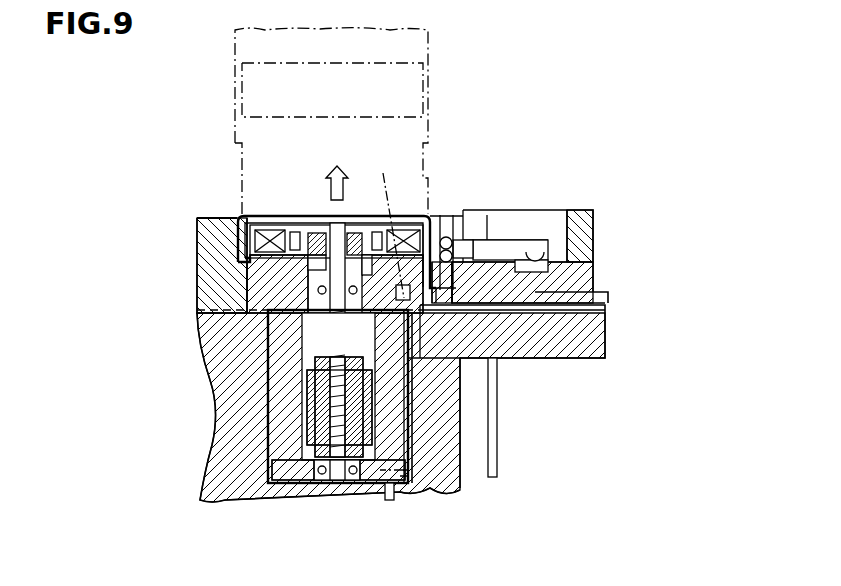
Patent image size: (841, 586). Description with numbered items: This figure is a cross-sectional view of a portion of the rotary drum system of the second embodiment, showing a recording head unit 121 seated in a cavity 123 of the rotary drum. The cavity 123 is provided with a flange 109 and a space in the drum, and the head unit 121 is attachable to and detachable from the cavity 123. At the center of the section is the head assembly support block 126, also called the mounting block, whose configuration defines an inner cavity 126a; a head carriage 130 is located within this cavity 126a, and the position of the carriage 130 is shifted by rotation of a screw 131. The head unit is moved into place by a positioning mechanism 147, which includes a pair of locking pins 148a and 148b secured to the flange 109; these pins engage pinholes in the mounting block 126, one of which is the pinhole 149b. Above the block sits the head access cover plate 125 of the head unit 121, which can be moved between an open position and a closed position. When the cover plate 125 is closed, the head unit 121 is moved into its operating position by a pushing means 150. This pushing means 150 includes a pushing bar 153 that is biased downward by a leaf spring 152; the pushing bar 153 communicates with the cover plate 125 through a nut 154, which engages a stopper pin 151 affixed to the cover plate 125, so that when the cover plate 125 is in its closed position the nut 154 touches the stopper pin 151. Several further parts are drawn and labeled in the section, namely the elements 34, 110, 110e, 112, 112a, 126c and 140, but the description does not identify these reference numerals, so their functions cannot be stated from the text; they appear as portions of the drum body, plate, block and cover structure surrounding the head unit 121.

The screw shaft 34 is at (345, 350).
The flange 109 is at (562, 346).
The base body 110 is at (210, 293).
The upper portion of base body 110e is at (250, 276).
The upper plate 112 is at (200, 216).
The upper surface of plate 112a is at (245, 240).
The first head unit 121 is at (231, 212).
The cavity 123 is at (416, 420).
The cover plate 125 is at (418, 50).
The head assembly support block 126 is at (405, 115).
The cavity 126a is at (303, 352).
The housing bottom plate 126c is at (292, 485).
The carriage 130 is at (310, 425).
The screw 131 is at (322, 484).
The support member 140 is at (402, 226).
The positioning mechanism 147 is at (406, 485).
The locking pin 148a is at (458, 384).
The locking pin 148b is at (387, 494).
The pinhole 149b is at (483, 497).
The pushing means 150 is at (486, 232).
The stopper pin 151 is at (452, 306).
The leaf spring 152 is at (466, 236).
The pushing bar 153 is at (528, 240).
The nut 154 is at (445, 232).